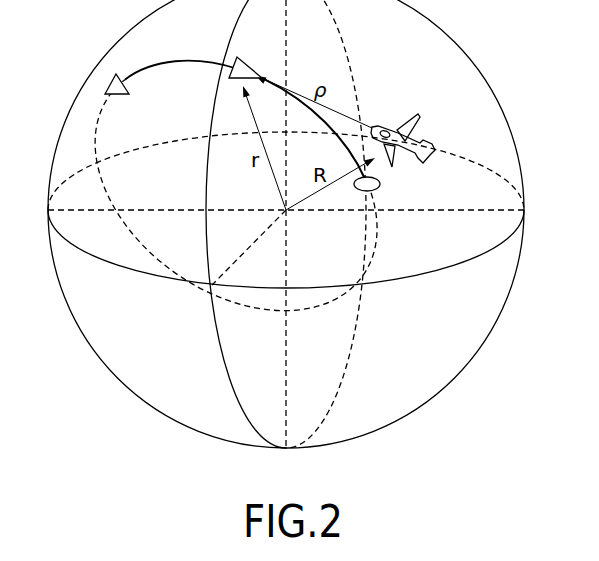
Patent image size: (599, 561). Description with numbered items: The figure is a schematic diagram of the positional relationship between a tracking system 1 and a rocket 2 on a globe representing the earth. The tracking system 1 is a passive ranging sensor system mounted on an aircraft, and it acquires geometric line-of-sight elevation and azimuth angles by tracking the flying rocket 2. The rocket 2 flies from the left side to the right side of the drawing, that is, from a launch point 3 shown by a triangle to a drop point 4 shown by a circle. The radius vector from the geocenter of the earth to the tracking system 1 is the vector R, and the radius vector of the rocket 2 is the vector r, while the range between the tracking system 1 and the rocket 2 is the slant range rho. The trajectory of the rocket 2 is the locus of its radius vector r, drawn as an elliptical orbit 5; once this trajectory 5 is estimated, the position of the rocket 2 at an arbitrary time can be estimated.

The tracking system 1 is at (390, 120).
The rocket 2 is at (250, 56).
The launch point 3 is at (117, 96).
The drop point 4 is at (380, 186).
The elliptical orbit 5 is at (333, 302).